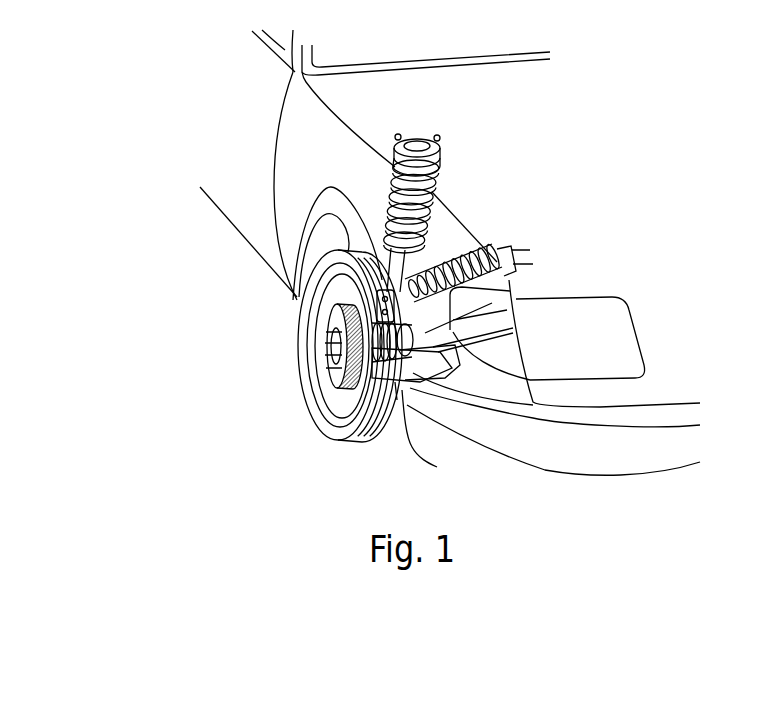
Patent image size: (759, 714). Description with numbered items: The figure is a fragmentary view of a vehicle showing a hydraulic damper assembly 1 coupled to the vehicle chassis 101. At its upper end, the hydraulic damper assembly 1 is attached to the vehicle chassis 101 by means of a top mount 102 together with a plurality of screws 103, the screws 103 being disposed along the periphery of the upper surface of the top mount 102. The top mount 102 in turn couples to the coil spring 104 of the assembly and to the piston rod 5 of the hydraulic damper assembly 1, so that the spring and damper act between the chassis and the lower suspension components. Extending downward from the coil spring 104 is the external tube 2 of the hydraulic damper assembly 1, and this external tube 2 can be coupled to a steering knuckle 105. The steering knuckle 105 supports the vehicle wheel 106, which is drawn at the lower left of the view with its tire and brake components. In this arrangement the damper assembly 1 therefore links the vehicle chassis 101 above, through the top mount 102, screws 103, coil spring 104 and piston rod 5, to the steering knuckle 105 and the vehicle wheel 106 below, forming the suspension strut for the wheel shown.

The hydraulic damper assembly 1 is at (558, 165).
The external tube 2 is at (377, 233).
The piston rod 5 is at (437, 207).
The vehicle chassis 101 is at (293, 85).
The top mount 102 is at (438, 160).
The plurality of screws 103 is at (440, 142).
The coil spring 104 is at (437, 186).
The steering knuckle 105 is at (380, 303).
The vehicle wheel 106 is at (337, 416).